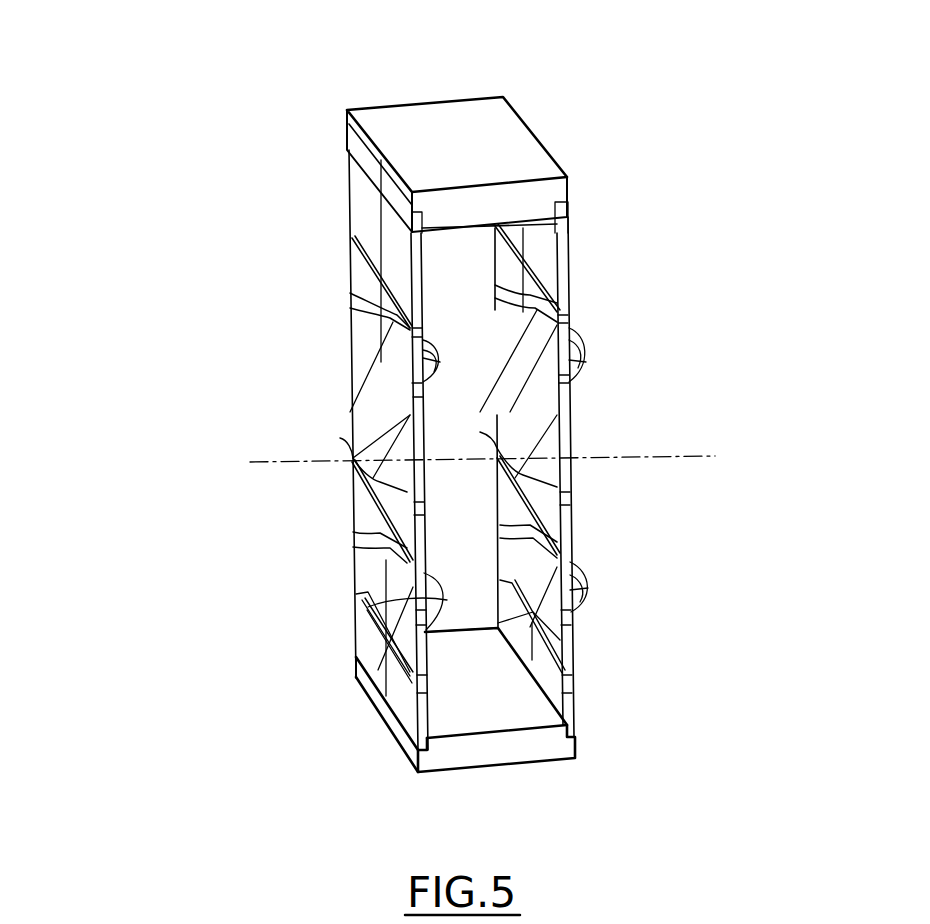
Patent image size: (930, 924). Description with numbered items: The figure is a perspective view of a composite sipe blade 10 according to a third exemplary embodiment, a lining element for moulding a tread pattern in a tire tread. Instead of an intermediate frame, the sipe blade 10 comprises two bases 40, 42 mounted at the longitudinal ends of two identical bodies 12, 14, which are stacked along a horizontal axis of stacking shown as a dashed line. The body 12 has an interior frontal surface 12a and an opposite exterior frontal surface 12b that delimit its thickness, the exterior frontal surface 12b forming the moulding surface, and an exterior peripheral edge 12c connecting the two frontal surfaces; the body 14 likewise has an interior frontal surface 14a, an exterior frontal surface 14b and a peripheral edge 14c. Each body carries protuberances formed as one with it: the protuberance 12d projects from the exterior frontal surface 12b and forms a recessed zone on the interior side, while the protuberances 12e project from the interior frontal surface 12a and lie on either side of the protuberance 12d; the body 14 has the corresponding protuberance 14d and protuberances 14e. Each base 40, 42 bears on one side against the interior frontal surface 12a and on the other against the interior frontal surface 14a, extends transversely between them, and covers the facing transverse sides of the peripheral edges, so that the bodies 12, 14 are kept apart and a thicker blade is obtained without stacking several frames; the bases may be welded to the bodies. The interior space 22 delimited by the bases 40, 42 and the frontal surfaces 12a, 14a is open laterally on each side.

The composite sipe blade 10 is at (530, 63).
The body 12 is at (350, 302).
The interior frontal surface 12a is at (424, 765).
The exterior frontal surface 12b is at (373, 645).
The exterior peripheral edge 12c is at (410, 270).
The protuberance 12d is at (342, 432).
The protuberances 12e is at (405, 356).
The body 14 is at (570, 302).
The interior frontal surface 14a is at (548, 680).
The exterior frontal surface 14b is at (573, 665).
The exterior peripheral edge 14c is at (568, 258).
The protuberance 14d is at (528, 432).
The protuberances 14e is at (586, 362).
The interior space 22 is at (463, 497).
The base 40 is at (496, 748).
The base 42 is at (434, 124).